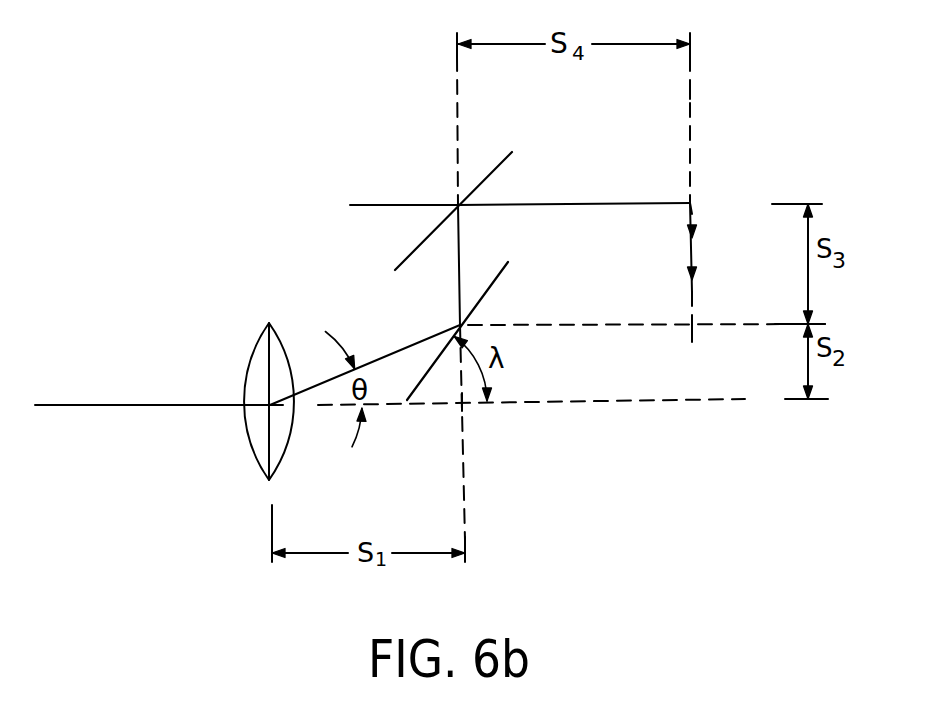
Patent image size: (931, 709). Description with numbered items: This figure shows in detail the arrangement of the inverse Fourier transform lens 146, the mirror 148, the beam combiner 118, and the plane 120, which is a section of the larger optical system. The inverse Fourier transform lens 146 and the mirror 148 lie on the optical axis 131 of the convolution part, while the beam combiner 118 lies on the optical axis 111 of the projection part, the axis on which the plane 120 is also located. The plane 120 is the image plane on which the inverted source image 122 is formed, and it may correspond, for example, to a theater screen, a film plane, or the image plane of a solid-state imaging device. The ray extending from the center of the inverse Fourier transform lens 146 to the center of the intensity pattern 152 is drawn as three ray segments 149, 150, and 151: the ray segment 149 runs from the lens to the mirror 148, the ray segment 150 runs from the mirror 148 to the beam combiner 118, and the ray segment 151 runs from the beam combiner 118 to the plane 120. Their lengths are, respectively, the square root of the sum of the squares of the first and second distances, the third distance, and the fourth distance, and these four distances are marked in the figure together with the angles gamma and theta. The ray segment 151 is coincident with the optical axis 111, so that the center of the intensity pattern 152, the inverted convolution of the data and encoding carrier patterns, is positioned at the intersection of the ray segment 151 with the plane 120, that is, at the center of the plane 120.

The optical axis 111 is at (375, 205).
The beam combiner 118 is at (490, 173).
The plane 120 is at (690, 97).
The source image 122 is at (692, 253).
The optical axis 131 is at (78, 404).
The inverse Fourier transform lens 146 is at (254, 452).
The mirror 148 is at (483, 298).
The ray segment 149 is at (400, 350).
The ray segment 150 is at (461, 253).
The ray segment 151 is at (572, 204).
The intensity pattern 152 is at (693, 213).